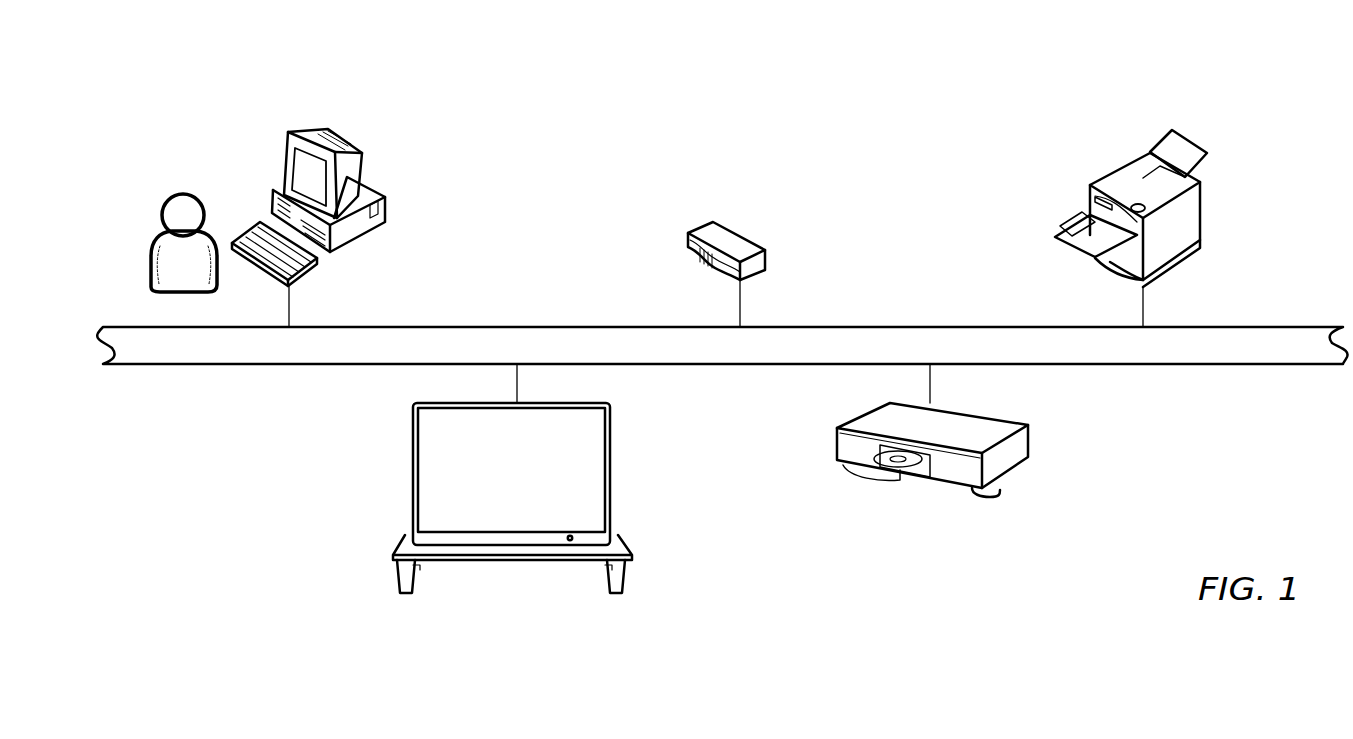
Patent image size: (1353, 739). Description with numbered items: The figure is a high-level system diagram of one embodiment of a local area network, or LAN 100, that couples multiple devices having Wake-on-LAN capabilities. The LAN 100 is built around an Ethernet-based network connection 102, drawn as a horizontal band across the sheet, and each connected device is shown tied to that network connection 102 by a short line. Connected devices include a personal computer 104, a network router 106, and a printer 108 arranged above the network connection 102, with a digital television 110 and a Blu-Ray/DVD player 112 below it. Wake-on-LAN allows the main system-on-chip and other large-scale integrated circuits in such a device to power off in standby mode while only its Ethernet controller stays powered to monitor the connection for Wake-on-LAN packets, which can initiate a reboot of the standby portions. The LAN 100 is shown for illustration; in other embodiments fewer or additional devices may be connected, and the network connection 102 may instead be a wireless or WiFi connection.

The local area network (LAN) 100 is at (1008, 81).
The Ethernet-based network connection 102 is at (526, 327).
The personal computer 104 is at (343, 148).
The network router 106 is at (767, 255).
The printer 108 is at (1205, 212).
The digital television (DTV) 110 is at (611, 484).
The Blu-Ray/DVD player 112 is at (1029, 443).